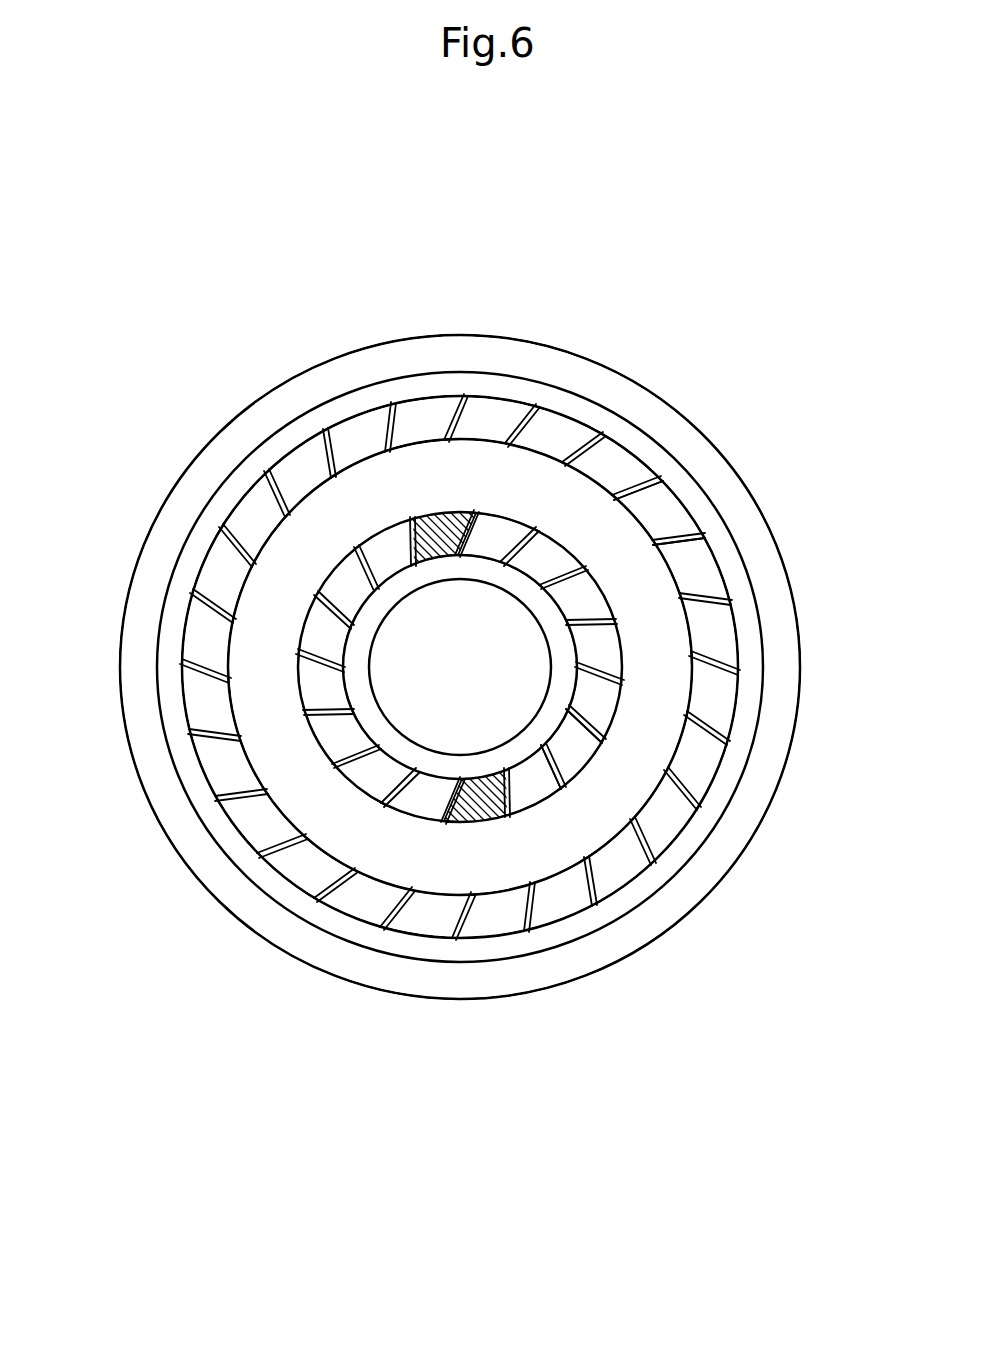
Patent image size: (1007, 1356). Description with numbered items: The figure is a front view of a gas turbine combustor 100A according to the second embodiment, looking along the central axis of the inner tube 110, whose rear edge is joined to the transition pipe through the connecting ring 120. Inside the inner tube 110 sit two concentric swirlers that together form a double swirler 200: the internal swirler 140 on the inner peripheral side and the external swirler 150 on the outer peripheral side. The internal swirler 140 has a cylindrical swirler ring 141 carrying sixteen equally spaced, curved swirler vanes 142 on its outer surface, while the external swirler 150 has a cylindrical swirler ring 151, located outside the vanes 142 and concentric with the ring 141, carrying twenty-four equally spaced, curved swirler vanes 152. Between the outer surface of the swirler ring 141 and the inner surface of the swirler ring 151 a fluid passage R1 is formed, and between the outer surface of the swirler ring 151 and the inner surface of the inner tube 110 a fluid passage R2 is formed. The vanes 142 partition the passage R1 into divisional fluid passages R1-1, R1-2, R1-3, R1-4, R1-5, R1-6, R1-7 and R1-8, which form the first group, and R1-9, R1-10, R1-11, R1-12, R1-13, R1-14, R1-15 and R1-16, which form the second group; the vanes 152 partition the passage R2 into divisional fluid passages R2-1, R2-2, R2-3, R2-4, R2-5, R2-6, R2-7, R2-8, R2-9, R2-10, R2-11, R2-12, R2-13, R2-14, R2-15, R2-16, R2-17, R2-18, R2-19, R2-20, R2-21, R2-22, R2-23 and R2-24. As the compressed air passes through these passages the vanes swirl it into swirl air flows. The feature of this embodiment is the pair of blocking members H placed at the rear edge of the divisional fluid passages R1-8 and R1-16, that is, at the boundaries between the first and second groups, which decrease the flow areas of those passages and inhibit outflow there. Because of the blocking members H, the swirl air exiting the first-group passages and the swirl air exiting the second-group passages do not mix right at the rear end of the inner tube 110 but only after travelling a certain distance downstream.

The combustor 100A is at (465, 252).
The inner tube 110 is at (247, 460).
The connecting ring 120 is at (507, 353).
The internal swirler 140 is at (700, 788).
The swirler ring 141 is at (660, 900).
The swirler vanes 142 is at (600, 742).
The external swirler 150 is at (692, 633).
The swirler ring 151 is at (712, 586).
The swirler vanes 152 is at (668, 493).
The double swirler 200 is at (356, 440).
The blocking members H is at (472, 512).
The fluid passage R1 is at (584, 692).
The fluid passage R2 is at (640, 455).
The divisional fluid passage R1-1 is at (487, 527).
The divisional fluid passage R1-2 is at (541, 548).
The divisional fluid passage R1-3 is at (582, 586).
The divisional fluid passage R1-4 is at (605, 638).
The divisional fluid passage R1-5 is at (606, 692).
The divisional fluid passage R1-6 is at (584, 743).
The divisional fluid passage R1-7 is at (544, 782).
The divisional fluid passage R1-8 is at (491, 804).
The divisional fluid passage R1-9 is at (433, 805).
The divisional fluid passage R1-10 is at (379, 784).
The divisional fluid passage R1-11 is at (338, 746).
The divisional fluid passage R1-12 is at (315, 695).
The divisional fluid passage R1-13 is at (314, 640).
The divisional fluid passage R1-14 is at (336, 589).
The divisional fluid passage R1-15 is at (376, 550).
The divisional fluid passage R1-16 is at (429, 528).
The divisional fluid passage R2-1 is at (477, 415).
The divisional fluid passage R2-2 is at (544, 427).
The divisional fluid passage R2-3 is at (605, 456).
The divisional fluid passage R2-4 is at (657, 500).
The divisional fluid passage R2-5 is at (695, 554).
The divisional fluid passage R2-6 is at (717, 617).
The divisional fluid passage R2-7 is at (721, 682).
The divisional fluid passage R2-8 is at (708, 747).
The divisional fluid passage R2-9 is at (678, 806).
The divisional fluid passage R2-10 is at (633, 855).
The divisional fluid passage R2-11 is at (565, 900).
The divisional fluid passage R2-12 is at (511, 913).
The divisional fluid passage R2-13 is at (443, 917).
The divisional fluid passage R2-14 is at (376, 905).
The divisional fluid passage R2-15 is at (315, 876).
The divisional fluid passage R2-16 is at (263, 832).
The divisional fluid passage R2-17 is at (225, 778).
The divisional fluid passage R2-18 is at (203, 715).
The divisional fluid passage R2-19 is at (199, 650).
The divisional fluid passage R2-20 is at (212, 585).
The divisional fluid passage R2-21 is at (242, 526).
The divisional fluid passage R2-22 is at (287, 477).
The divisional fluid passage R2-23 is at (344, 440).
The divisional fluid passage R2-24 is at (409, 419).